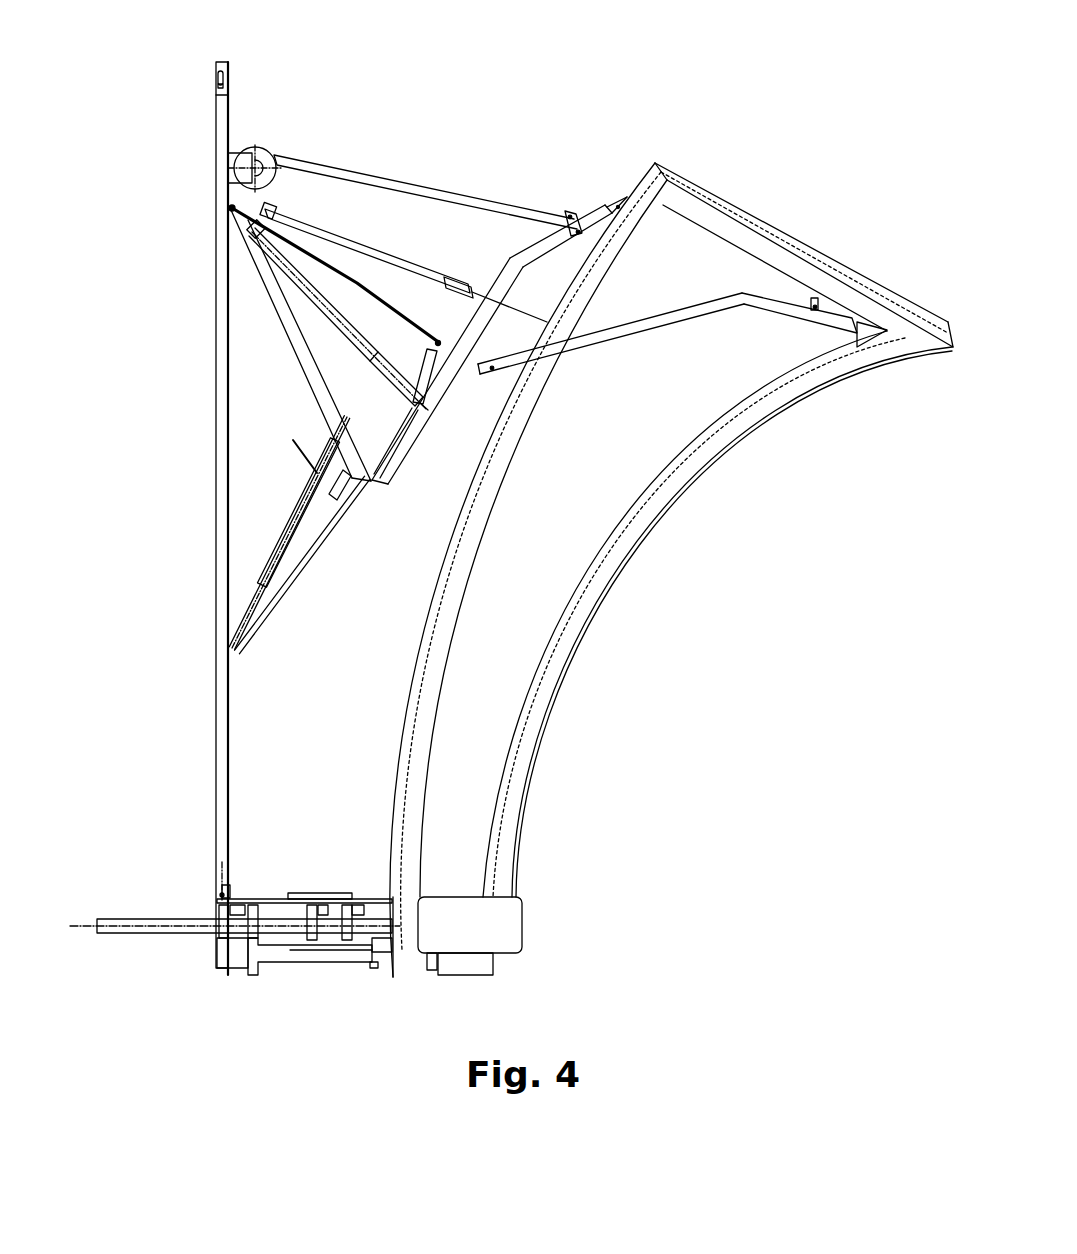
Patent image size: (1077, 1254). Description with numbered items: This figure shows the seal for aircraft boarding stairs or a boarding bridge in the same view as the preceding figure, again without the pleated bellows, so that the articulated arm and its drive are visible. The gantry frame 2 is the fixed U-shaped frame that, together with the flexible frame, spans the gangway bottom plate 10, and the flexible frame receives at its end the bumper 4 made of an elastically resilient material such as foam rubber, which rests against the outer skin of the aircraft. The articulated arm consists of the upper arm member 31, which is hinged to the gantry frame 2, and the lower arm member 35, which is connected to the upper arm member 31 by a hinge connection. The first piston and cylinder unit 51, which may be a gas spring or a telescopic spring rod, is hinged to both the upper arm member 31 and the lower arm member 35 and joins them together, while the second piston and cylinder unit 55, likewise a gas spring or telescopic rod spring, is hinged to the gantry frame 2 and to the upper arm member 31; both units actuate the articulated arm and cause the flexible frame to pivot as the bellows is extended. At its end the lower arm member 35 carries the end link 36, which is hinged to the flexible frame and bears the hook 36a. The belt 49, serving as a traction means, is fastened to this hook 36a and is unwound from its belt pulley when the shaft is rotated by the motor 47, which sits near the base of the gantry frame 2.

The gantry frame 2 is at (218, 276).
The bumper 4 is at (525, 782).
The gangway bottom plate 10 is at (450, 897).
The upper arm member 31 is at (357, 283).
The lower arm member 35 is at (478, 330).
The end link 36 is at (545, 238).
The hook 36a is at (570, 215).
The motor 47 is at (237, 164).
The belt 49 is at (483, 207).
The first piston and cylinder unit 51 is at (387, 258).
The second piston and cylinder unit 55 is at (385, 415).